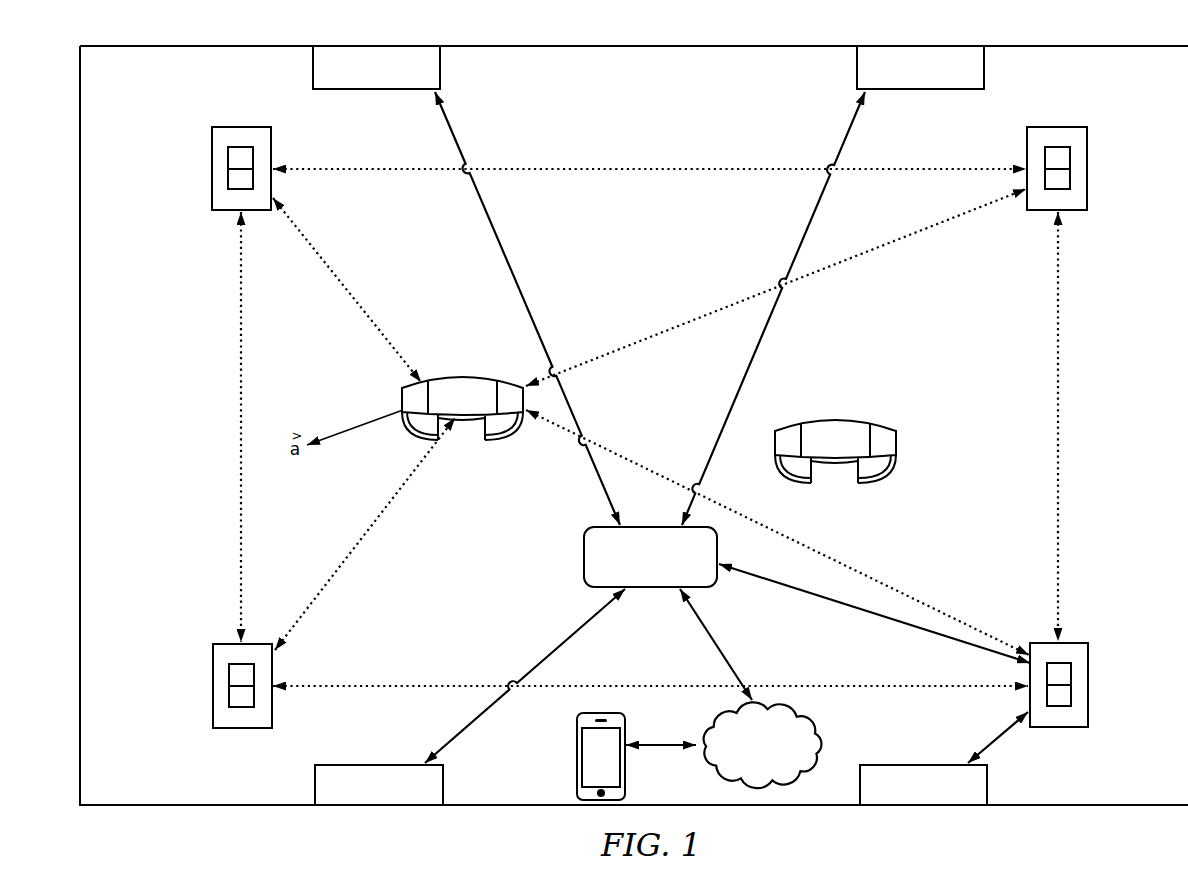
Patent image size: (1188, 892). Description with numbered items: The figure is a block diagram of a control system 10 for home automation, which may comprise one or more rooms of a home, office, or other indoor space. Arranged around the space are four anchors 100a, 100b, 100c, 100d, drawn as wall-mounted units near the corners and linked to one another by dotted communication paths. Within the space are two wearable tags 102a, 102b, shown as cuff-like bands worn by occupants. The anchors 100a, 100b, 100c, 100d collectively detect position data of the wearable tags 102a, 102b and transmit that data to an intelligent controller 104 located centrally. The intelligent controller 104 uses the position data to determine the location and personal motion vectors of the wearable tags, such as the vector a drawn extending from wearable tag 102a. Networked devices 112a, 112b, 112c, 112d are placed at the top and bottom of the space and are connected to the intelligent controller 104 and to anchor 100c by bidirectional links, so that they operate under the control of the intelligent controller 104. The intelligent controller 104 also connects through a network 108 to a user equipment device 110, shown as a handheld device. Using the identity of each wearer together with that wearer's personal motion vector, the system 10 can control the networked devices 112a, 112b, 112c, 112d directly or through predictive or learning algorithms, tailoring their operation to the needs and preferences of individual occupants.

The control system 10 is at (634, 425).
The anchor 100a is at (212, 168).
The anchor 100b is at (213, 668).
The anchor 100c is at (1088, 680).
The anchor 100d is at (1087, 168).
The wearable tag 102a is at (462, 408).
The wearable tag 102b is at (835, 451).
The intelligent controller 104 is at (650, 557).
The network 108 is at (828, 733).
The user equipment device 110 is at (576, 752).
The networked device 112a is at (379, 785).
The networked device 112b is at (376, 67).
The networked device 112c is at (920, 67).
The networked device 112d is at (923, 785).